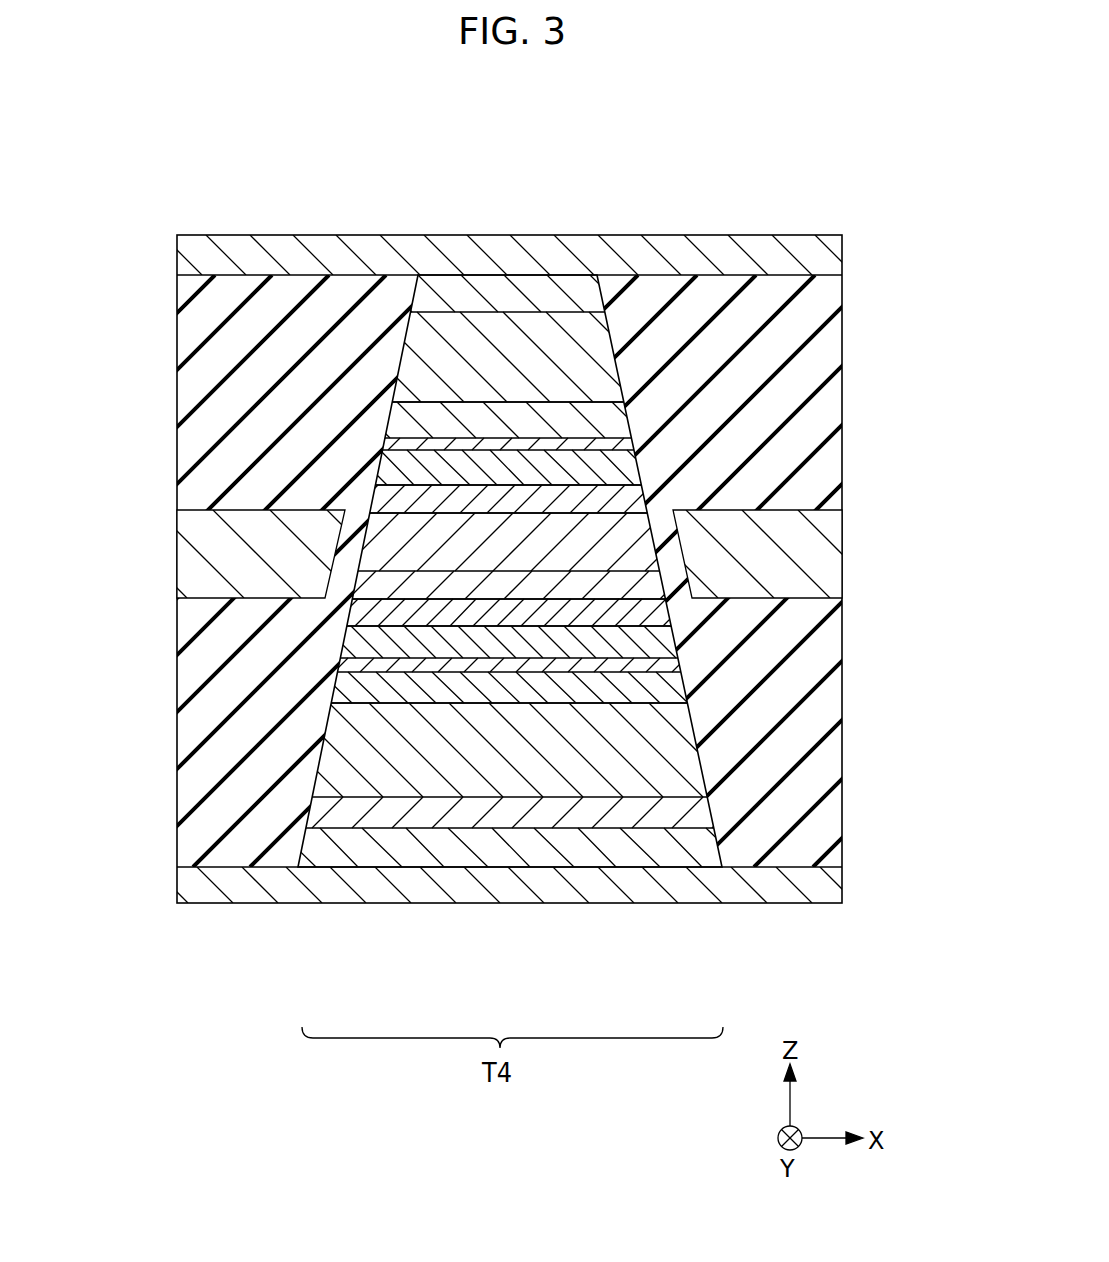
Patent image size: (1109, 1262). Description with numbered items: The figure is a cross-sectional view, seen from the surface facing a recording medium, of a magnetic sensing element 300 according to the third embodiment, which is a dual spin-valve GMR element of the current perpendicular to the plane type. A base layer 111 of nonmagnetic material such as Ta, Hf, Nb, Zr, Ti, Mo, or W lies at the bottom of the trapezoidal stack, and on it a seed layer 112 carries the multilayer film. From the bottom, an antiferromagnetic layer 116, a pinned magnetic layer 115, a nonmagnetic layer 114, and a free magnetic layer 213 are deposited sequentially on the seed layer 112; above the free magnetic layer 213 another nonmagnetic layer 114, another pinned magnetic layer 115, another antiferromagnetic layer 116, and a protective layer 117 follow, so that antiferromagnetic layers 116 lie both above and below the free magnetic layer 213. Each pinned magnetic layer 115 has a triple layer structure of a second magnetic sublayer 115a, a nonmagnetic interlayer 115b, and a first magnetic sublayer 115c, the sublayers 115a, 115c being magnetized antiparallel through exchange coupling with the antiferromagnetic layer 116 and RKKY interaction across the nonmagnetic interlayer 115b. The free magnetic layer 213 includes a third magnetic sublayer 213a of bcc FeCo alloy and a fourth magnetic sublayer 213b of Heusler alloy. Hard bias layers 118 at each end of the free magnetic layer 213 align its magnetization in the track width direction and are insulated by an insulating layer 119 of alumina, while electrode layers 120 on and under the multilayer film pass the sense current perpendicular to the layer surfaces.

The magnetic sensing element 300 is at (784, 222).
The electrode layer 120 is at (222, 263).
The insulating layer 119 is at (222, 357).
The hard bias layer 118 is at (227, 562).
The protective layer 117 is at (445, 297).
The antiferromagnetic layer 116 is at (457, 343).
The pinned magnetic layer 115 is at (727, 172).
The second magnetic sublayer 115a is at (508, 467).
The nonmagnetic interlayer 115b is at (550, 443).
The first magnetic sublayer 115c is at (588, 413).
The nonmagnetic layer 114 is at (465, 500).
The free magnetic layer 213 is at (768, 980).
The third magnetic sublayer 213a is at (580, 580).
The fourth magnetic sublayer 213b is at (615, 542).
The seed layer 112 is at (350, 815).
The base layer 111 is at (318, 850).